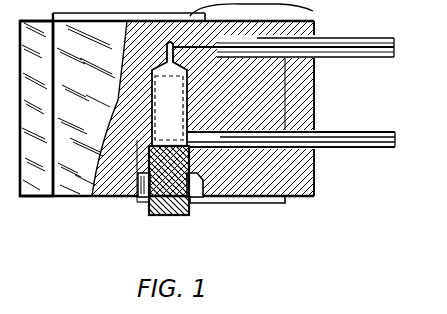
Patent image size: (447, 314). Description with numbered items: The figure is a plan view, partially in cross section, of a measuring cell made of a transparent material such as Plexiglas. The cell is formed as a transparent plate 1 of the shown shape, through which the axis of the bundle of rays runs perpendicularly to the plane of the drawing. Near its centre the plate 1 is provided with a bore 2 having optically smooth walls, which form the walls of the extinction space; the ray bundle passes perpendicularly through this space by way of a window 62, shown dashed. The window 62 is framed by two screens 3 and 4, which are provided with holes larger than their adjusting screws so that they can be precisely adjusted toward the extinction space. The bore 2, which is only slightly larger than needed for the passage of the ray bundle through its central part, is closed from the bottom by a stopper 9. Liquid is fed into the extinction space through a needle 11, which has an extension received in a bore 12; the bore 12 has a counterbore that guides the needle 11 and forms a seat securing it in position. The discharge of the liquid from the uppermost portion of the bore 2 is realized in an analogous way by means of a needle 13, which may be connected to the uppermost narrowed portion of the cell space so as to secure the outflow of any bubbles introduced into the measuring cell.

The transparent plate 1 is at (306, 198).
The bore 2 is at (123, 198).
The screen 3 is at (262, 204).
The screen 4 is at (311, 8).
The stopper 9 is at (169, 217).
The needle 11 is at (371, 133).
The bore 12 is at (316, 165).
The needle 13 is at (386, 58).
The window 62 is at (188, 143).